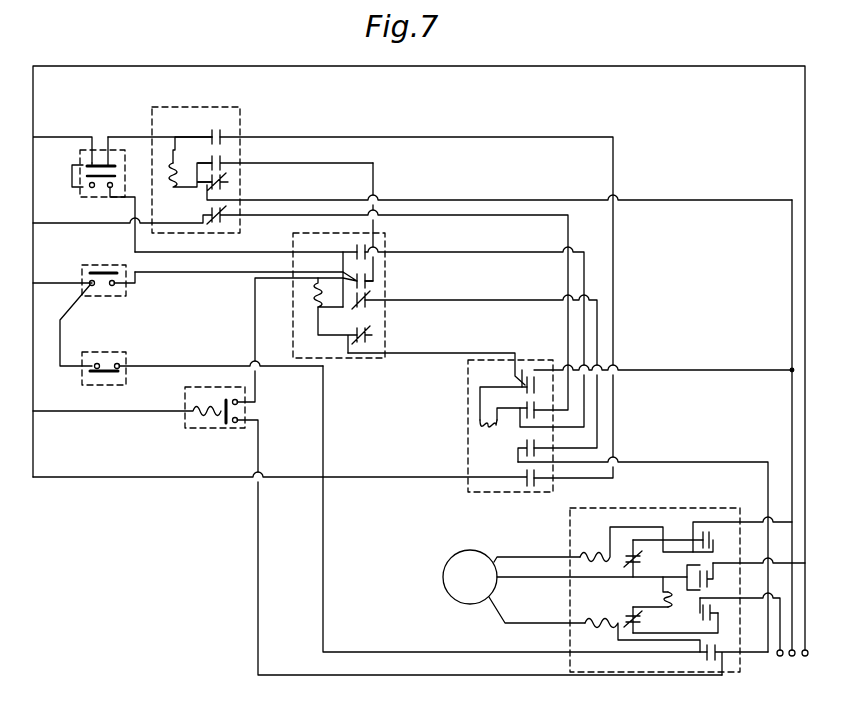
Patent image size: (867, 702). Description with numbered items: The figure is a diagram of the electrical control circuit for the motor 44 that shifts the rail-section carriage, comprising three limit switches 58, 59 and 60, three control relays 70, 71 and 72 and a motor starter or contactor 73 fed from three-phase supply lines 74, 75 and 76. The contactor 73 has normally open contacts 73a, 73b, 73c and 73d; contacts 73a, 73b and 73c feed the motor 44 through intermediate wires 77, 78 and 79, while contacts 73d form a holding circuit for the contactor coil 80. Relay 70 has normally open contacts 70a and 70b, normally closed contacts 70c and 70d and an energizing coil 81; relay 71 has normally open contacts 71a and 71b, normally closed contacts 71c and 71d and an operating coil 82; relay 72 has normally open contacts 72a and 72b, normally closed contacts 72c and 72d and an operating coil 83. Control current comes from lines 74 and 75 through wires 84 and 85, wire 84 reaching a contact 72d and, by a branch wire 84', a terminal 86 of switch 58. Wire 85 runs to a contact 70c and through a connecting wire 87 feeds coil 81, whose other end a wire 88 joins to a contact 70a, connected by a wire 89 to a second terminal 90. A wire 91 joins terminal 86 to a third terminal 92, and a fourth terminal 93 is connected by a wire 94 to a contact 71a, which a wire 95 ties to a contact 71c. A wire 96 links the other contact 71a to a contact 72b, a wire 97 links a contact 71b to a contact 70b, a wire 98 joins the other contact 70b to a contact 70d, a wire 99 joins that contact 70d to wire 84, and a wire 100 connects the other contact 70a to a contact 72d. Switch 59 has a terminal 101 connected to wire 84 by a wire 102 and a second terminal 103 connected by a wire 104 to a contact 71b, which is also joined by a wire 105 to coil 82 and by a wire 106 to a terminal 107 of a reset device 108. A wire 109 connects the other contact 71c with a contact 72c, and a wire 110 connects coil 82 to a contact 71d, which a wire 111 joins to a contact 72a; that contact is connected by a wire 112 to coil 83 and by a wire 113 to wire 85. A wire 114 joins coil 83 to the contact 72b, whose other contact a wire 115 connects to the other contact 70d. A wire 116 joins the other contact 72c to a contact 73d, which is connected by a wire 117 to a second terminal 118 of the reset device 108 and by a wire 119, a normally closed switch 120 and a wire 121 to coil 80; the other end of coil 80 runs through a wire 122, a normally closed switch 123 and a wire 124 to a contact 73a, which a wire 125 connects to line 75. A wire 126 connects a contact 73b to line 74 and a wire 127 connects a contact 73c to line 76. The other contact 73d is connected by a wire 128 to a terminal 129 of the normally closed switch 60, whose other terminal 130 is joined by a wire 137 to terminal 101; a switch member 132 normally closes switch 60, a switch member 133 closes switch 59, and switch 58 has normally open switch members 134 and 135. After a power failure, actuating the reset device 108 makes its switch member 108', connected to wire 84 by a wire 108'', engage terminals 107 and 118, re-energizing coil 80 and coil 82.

The motor 44 is at (482, 558).
The limit switch 58 is at (100, 190).
The limit switch 59 is at (103, 290).
The limit switch 60 is at (100, 378).
The control relay 70 is at (228, 110).
The normally open contacts 70a is at (222, 138).
The normally open contacts 70b is at (222, 163).
The normally closed contacts 70c is at (222, 182).
The normally closed contacts 70d is at (222, 215).
The control relay 71 is at (378, 250).
The normally open contacts 71a is at (354, 250).
The normally open contacts 71b is at (368, 282).
The normally closed contacts 71c is at (368, 300).
The normally closed contacts 71d is at (368, 335).
The control relay 72 is at (533, 360).
The normally open contacts 72a is at (542, 385).
The normally open contacts 72b is at (536, 410).
The normally closed contacts 72c is at (536, 448).
The normally closed contacts 72d is at (536, 478).
The motor starter or contactor 73 is at (695, 510).
The normally open contacts 73a is at (718, 538).
The normally open contacts 73b is at (708, 575).
The normally open contacts 73c is at (712, 612).
The normally open contacts 73d is at (703, 658).
The supply line 74 is at (804, 656).
The supply line 75 is at (779, 541).
The supply line 76 is at (777, 618).
The intermediate wire 77 is at (590, 547).
The intermediate wire 78 is at (598, 577).
The intermediate wire 79 is at (595, 613).
The contactor coil 80 is at (672, 602).
The energizing coil 81 is at (180, 168).
The operating coil 82 is at (319, 292).
The operating coil 83 is at (487, 433).
The control current supply wire 84 is at (420, 361).
The supply line branch 84' is at (71, 126).
The control current supply wire 85 is at (792, 415).
The terminal 86 is at (87, 156).
The connecting wire 87 is at (198, 183).
The wire 88 is at (175, 150).
The wire 89 is at (172, 137).
The second terminal 90 is at (110, 160).
The wire 91 is at (72, 178).
The third terminal 92 is at (90, 188).
The fourth terminal 93 is at (128, 207).
The wire 94 is at (213, 252).
The wire 95 is at (340, 308).
The wire 96 is at (463, 259).
The wire 97 is at (375, 180).
The wire 98 is at (207, 212).
The wire 99 is at (108, 224).
The wire 100 is at (392, 136).
The terminal 101 is at (87, 305).
The wire 102 is at (55, 284).
The second terminal 103 is at (114, 285).
The wire 104 is at (204, 272).
The wire 105 is at (338, 269).
The wire 106 is at (255, 330).
The terminal 107 is at (229, 386).
The reset device 108 is at (127, 433).
The switch member 108' is at (210, 393).
The wire 108'' is at (162, 425).
The wire 109 is at (475, 307).
The wire 110 is at (318, 342).
The wire 111 is at (436, 358).
The wire 112 is at (482, 398).
The wire 113 is at (666, 370).
The wire 114 is at (513, 407).
The wire 115 is at (570, 232).
The wire 116 is at (660, 462).
The wire 117 is at (548, 680).
The second terminal 118 is at (234, 432).
The wire 119 is at (677, 633).
The normally closed switch 120 is at (642, 620).
The wire 121 is at (640, 607).
The wire 122 is at (662, 582).
The normally closed switch 123 is at (645, 562).
The wire 124 is at (650, 537).
The wire 125 is at (747, 515).
The wire 126 is at (748, 562).
The wire 127 is at (752, 598).
The wire 128 is at (418, 652).
The terminal 129 is at (119, 364).
The terminal 130 is at (99, 364).
The switch member 132 is at (120, 376).
The switch member 133 is at (118, 256).
The normally open switch member 134 is at (116, 172).
The normally open switch member 135 is at (100, 163).
The conductor 137 is at (60, 340).